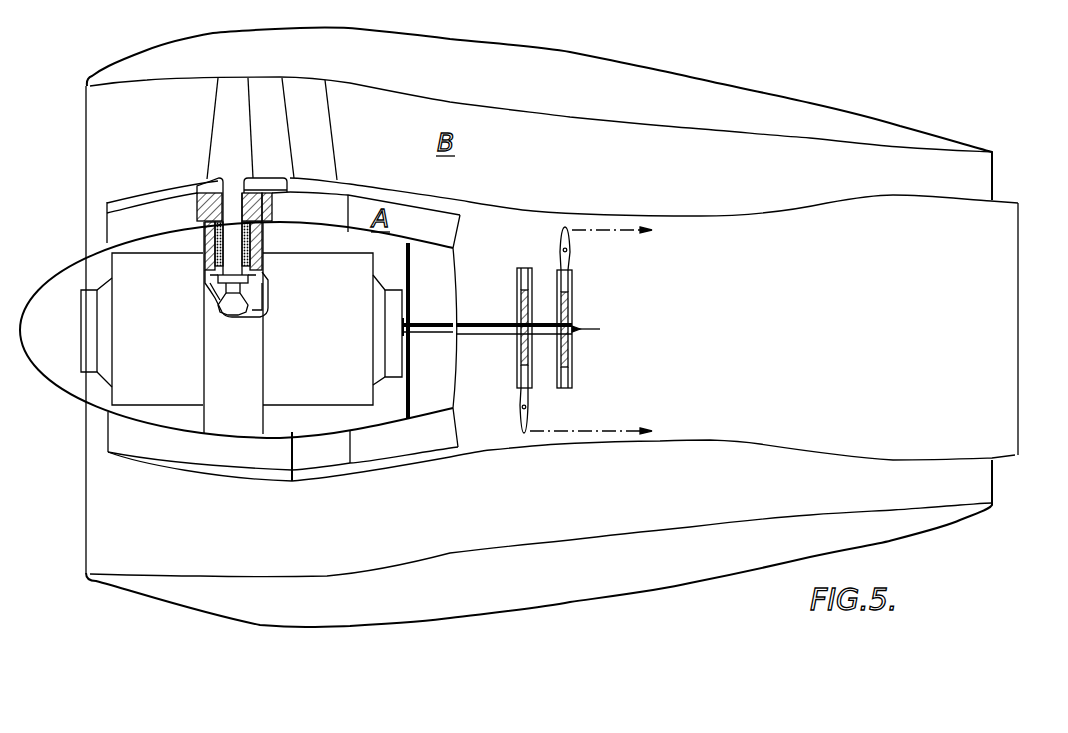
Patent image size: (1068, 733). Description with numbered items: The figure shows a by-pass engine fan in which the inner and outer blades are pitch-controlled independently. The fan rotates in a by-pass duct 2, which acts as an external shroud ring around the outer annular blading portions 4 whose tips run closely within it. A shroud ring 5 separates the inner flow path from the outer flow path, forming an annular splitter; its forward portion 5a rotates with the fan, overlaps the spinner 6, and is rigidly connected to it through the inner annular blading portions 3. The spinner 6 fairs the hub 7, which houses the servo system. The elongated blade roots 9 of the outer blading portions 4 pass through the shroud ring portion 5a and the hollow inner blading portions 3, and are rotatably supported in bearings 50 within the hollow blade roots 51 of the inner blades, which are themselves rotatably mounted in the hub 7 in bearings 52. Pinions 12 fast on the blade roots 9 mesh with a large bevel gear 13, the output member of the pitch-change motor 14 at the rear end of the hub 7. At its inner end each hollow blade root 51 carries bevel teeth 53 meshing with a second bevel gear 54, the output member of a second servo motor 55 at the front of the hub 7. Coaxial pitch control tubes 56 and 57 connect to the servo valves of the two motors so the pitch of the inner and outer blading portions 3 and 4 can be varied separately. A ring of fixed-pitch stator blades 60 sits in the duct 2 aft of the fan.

The by-pass duct 2 is at (112, 67).
The inner annular blading portion 3 is at (208, 191).
The outer annular blading portion 4 is at (222, 118).
The shroud ring 5 is at (412, 188).
The forward portion of shroud ring 5a is at (147, 185).
The spinner 6 is at (62, 278).
The hub 7 is at (264, 241).
The blade roots 9 is at (230, 210).
The pinions 12 is at (232, 309).
The bevel gear 13 is at (268, 303).
The pitch-change motor 14 is at (362, 271).
The bearings 50 is at (250, 222).
The hollow blade roots 51 is at (212, 246).
The bearings 52 is at (273, 222).
The bevel teeth 53 is at (258, 279).
The second bevel gear 54 is at (207, 275).
The second servo motor 55 is at (122, 357).
The pitch control tube 56 is at (475, 337).
The pitch control tube 57 is at (507, 322).
The stator blades 60 is at (318, 120).